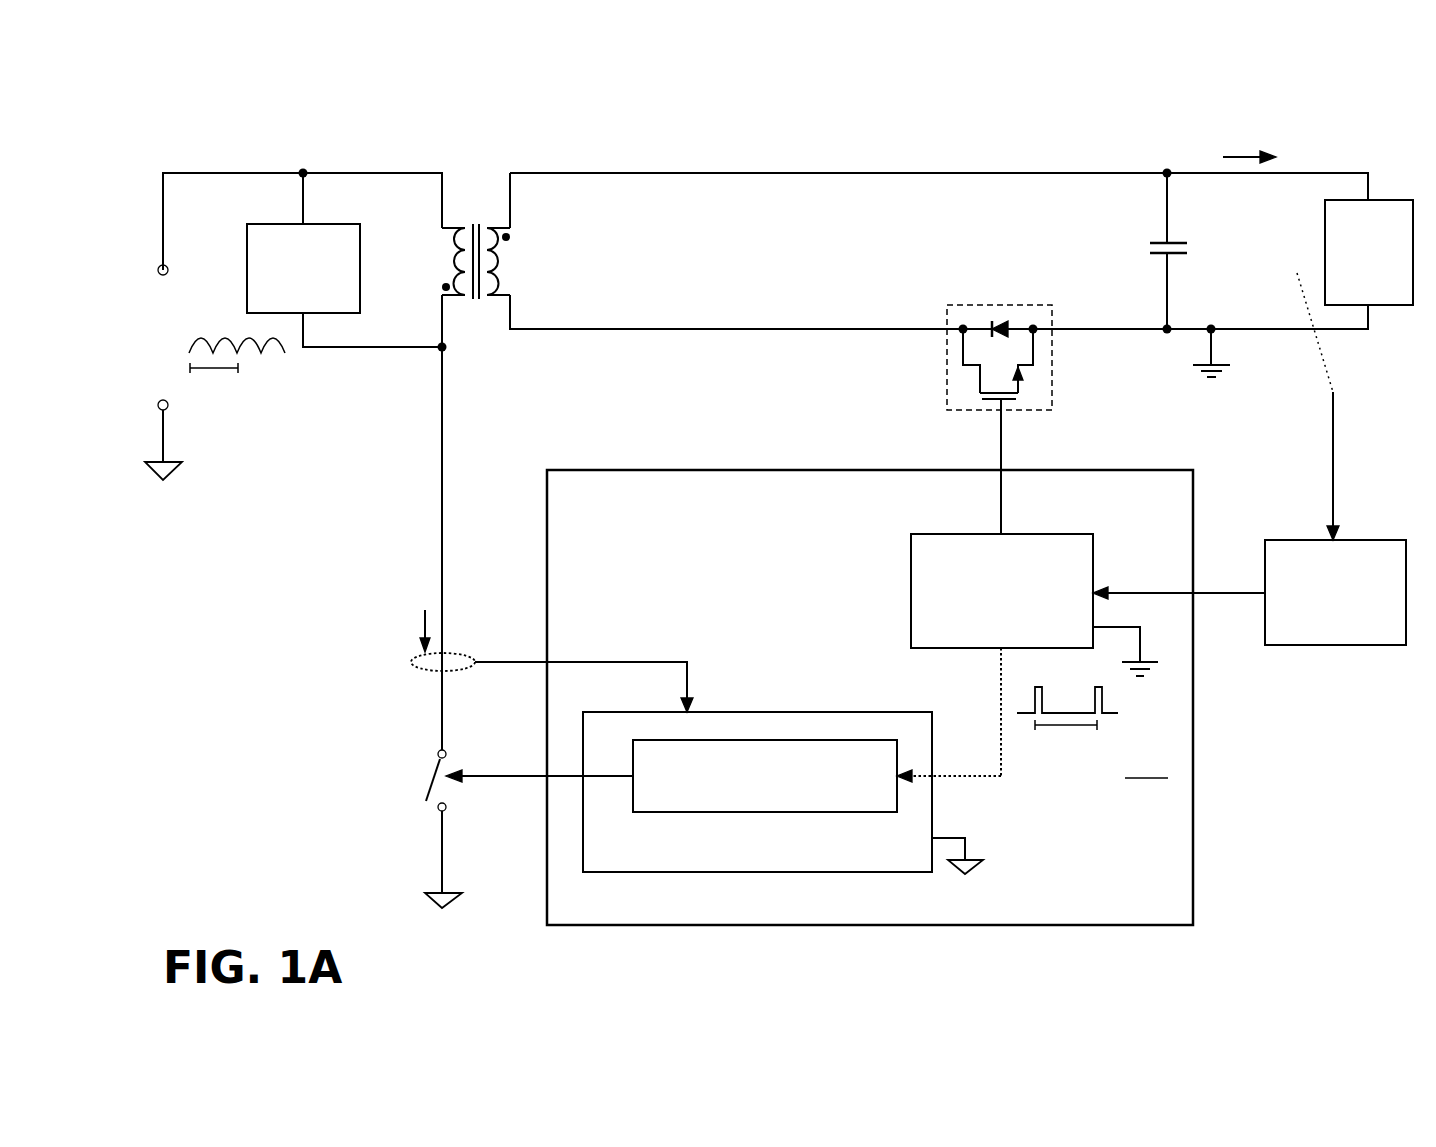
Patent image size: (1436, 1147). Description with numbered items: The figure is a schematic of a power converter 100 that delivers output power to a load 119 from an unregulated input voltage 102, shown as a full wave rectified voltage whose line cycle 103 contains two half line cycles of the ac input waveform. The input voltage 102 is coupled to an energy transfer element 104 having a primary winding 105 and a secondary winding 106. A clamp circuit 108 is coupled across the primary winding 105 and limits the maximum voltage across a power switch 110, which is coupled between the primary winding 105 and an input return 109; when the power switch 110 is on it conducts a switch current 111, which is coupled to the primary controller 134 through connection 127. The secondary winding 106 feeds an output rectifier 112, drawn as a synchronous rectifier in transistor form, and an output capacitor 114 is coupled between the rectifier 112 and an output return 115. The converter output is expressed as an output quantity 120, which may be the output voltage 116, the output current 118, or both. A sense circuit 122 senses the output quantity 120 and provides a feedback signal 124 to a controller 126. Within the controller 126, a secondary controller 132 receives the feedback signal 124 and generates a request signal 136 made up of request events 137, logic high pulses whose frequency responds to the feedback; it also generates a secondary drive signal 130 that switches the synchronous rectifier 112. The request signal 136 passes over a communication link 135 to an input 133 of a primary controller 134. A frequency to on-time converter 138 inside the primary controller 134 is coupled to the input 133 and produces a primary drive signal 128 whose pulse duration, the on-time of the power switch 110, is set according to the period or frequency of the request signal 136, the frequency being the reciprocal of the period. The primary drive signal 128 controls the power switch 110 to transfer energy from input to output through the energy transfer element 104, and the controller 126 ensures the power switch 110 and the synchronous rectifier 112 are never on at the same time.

The power converter 100 is at (1296, 88).
The input voltage VIN 102 is at (150, 322).
The line cycle 103 is at (224, 405).
The energy transfer element 104 is at (474, 182).
The primary winding 105 is at (432, 260).
The secondary winding 106 is at (518, 266).
The clamp circuit 108 is at (260, 228).
The input return 109 is at (165, 490).
The power switch SP 110 is at (382, 776).
The switch current ID 111 is at (378, 634).
The output rectifier D1 112 is at (972, 295).
The output capacitor CO 114 is at (1104, 244).
The output return 115 is at (1201, 393).
The output voltage VO 116 is at (1224, 272).
The output current IO 118 is at (1222, 132).
The load 119 is at (1388, 314).
The output quantity UO 120 is at (1344, 462).
The sense circuit 122 is at (1326, 654).
The feedback signal UFB 124 is at (1235, 600).
The controller 126 is at (625, 463).
The drain current sense signal 127 is at (512, 654).
The primary drive signal UDR 128 is at (495, 786).
The secondary drive signal USR 130 is at (1012, 504).
The secondary controller 132 is at (904, 588).
The input 133 is at (936, 781).
The primary controller 134 is at (794, 712).
The communication link 135 is at (996, 731).
The request signal UREQ 136 is at (918, 676).
The request events 137 is at (1097, 699).
The frequency to on-time converter 138 is at (751, 738).